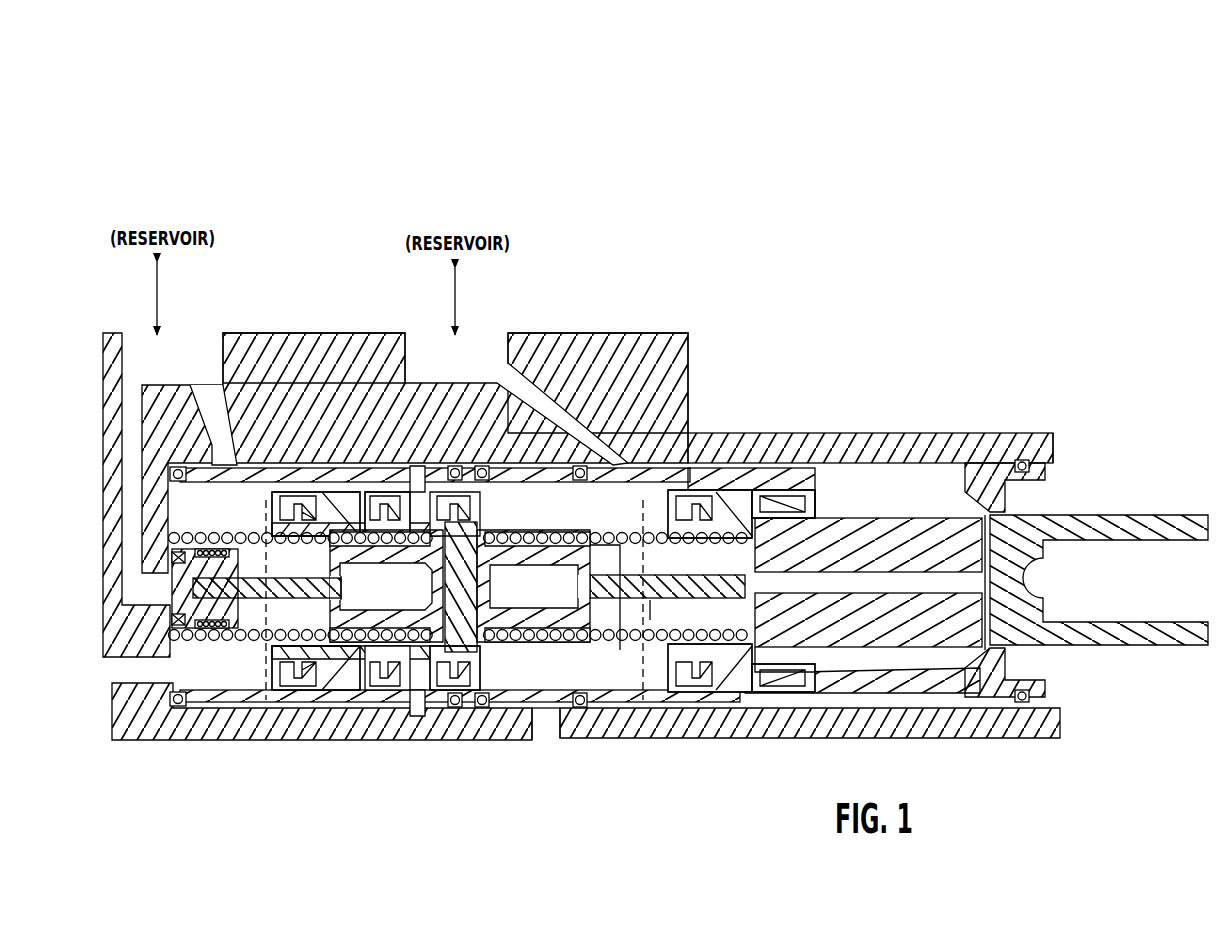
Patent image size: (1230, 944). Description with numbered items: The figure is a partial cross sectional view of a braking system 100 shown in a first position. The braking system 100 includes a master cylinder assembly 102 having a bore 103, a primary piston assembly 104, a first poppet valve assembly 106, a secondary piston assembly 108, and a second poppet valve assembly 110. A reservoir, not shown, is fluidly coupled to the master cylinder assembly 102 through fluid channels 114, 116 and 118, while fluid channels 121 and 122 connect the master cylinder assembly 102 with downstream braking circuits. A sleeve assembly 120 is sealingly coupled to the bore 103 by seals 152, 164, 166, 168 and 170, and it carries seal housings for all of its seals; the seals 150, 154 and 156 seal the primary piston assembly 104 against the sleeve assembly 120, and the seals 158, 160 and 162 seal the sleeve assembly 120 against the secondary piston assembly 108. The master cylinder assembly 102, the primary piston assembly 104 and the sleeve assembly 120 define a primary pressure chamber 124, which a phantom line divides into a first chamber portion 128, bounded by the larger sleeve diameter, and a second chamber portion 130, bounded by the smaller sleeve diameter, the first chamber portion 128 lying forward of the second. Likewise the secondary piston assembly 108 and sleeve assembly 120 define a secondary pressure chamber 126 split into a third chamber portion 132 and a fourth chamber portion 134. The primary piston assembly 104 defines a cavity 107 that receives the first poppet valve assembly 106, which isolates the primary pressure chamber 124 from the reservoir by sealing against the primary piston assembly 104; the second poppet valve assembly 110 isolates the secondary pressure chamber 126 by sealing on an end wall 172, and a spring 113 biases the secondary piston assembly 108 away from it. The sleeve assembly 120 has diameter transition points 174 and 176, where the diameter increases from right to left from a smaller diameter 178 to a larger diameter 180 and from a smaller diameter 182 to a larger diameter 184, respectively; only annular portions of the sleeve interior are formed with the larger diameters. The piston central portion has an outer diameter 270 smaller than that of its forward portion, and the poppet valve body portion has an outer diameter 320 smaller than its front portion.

The braking system 100 is at (110, 152).
The master cylinder assembly 102 is at (690, 335).
The bore 103 is at (890, 462).
The primary piston assembly 104 is at (1095, 456).
The first poppet valve assembly 106 is at (645, 640).
The cavity 107 is at (805, 580).
The secondary piston assembly 108 is at (612, 700).
The second poppet valve assembly 110 is at (256, 675).
The spring 113 is at (178, 685).
The fluid channel 114 is at (165, 588).
The fluid channel 116 is at (222, 462).
The fluid channel 118 is at (600, 440).
The sleeve assembly 120 is at (1048, 688).
The fluid channel 121 is at (547, 733).
The fluid channel 122 is at (117, 668).
The primary pressure chamber 124 is at (572, 513).
The secondary pressure chamber 126 is at (223, 523).
The first chamber portion 128 is at (690, 490).
The second chamber portion 130 is at (742, 500).
The first chamber portion 132 is at (282, 430).
The second chamber portion 134 is at (318, 650).
The seal 150 is at (1045, 520).
The seal 152 is at (1025, 466).
The seal 154 is at (765, 490).
The seal 156 is at (702, 670).
The seal 158 is at (392, 690).
The seal 160 is at (385, 492).
The seal 162 is at (298, 646).
The seal 164 is at (178, 476).
The seal 166 is at (458, 468).
The seal 168 is at (455, 695).
The seal 170 is at (583, 693).
The end wall 172 is at (175, 520).
The diameter transition point 174 is at (665, 612).
The diameter transition point 176 is at (258, 628).
The smaller diameter 178 is at (700, 660).
The larger diameter 180 is at (598, 612).
The smaller diameter 182 is at (276, 544).
The larger diameter 184 is at (212, 640).
The outer diameter 270 is at (858, 516).
The outer diameter 320 is at (580, 415).